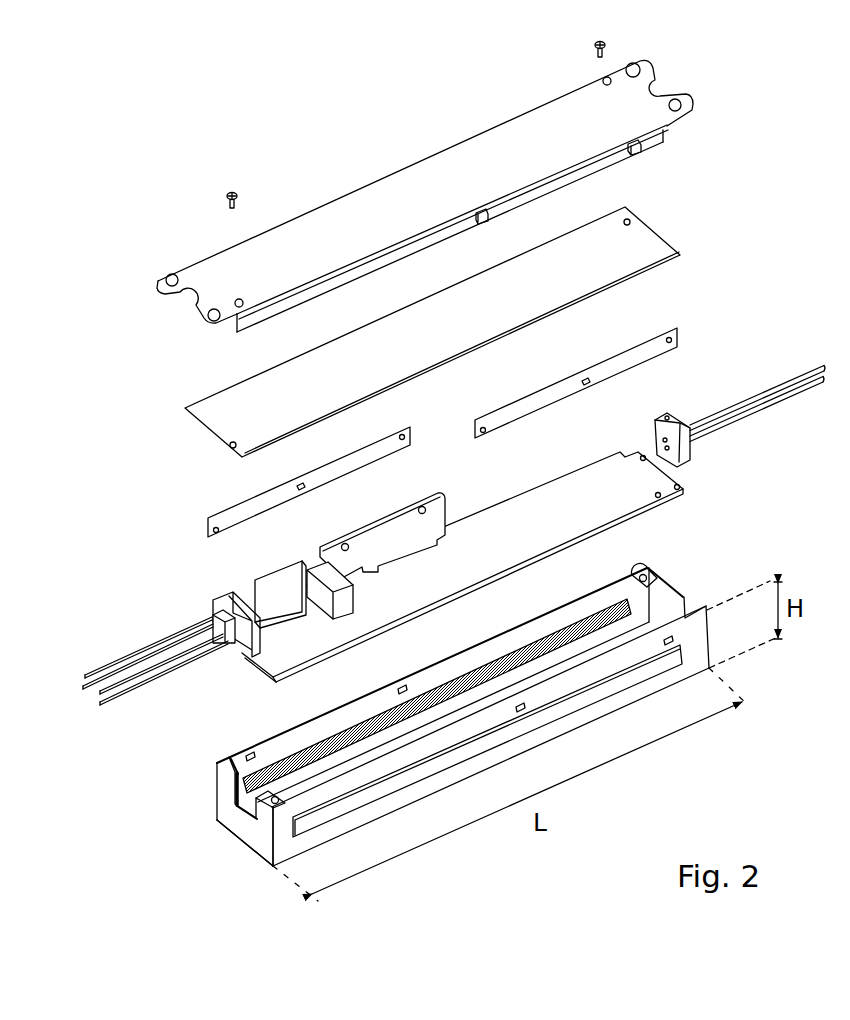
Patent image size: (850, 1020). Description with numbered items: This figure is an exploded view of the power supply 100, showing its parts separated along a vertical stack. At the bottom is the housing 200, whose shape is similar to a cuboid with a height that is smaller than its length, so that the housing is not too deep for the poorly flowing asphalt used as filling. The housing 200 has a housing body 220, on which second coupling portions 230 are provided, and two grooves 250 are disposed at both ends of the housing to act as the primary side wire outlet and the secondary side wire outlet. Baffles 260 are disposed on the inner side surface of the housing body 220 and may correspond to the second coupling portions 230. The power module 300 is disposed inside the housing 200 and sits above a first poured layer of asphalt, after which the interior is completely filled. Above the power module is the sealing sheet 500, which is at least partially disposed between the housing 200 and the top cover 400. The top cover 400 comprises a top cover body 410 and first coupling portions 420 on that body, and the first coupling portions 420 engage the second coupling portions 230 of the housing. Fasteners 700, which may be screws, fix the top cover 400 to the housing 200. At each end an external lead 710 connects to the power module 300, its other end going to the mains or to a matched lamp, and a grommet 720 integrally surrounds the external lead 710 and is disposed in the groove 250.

The power supply 100 is at (104, 66).
The housing 200 is at (102, 777).
The housing body 220 is at (230, 808).
The second coupling portions 230 is at (236, 752).
The grooves 250 is at (257, 810).
The baffles 260 is at (210, 517).
The power module 300 is at (262, 676).
The top cover 400 is at (505, 93).
The top cover body 410 is at (432, 187).
The first coupling portions 420 is at (492, 200).
The sealing sheet 500 is at (203, 431).
The fasteners 700 is at (225, 204).
The external lead 710 is at (765, 392).
The grommet 720 is at (672, 413).